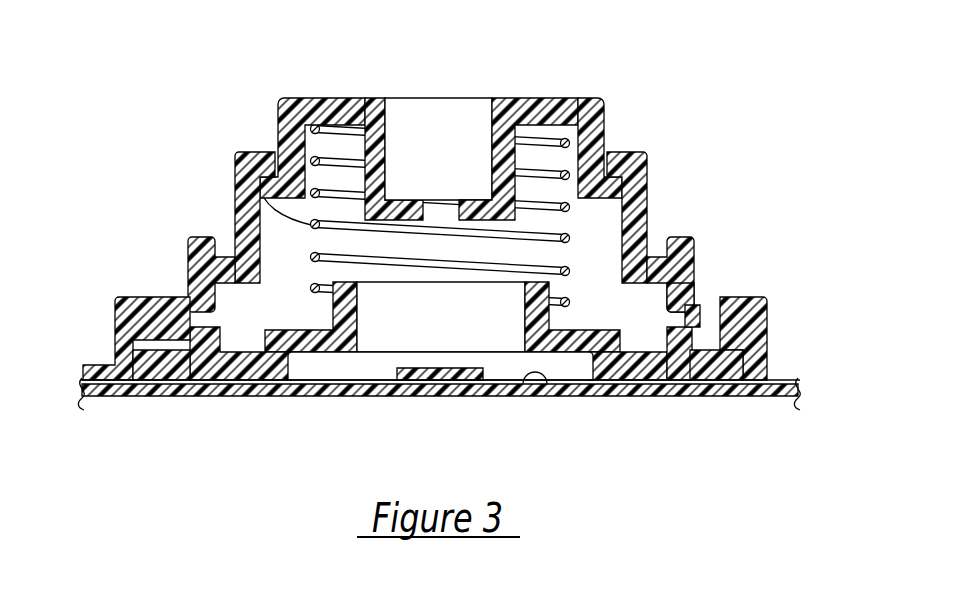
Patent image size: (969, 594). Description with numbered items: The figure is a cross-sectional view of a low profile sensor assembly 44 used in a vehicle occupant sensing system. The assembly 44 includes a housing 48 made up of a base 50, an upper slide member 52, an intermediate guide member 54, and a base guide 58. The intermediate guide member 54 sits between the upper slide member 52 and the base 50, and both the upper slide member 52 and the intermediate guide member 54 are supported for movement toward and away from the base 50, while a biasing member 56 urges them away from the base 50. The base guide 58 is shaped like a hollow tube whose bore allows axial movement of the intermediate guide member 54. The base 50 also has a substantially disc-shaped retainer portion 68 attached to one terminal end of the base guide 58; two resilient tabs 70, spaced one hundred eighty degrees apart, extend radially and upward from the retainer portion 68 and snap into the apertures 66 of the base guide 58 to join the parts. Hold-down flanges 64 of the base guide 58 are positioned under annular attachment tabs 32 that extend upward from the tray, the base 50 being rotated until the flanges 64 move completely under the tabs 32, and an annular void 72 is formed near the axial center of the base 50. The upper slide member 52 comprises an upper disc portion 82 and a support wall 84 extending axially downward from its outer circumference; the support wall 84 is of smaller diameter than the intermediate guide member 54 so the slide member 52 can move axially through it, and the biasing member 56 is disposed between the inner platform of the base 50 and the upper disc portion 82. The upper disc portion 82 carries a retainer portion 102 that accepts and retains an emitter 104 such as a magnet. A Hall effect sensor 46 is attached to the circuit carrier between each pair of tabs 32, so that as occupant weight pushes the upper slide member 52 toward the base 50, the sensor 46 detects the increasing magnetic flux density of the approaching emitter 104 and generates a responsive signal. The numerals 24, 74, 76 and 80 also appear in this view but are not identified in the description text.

The substrate 24 is at (537, 386).
The annular attachment tab 32 is at (749, 318).
The low profile sensor assembly 44 is at (694, 149).
The sensor 46 is at (434, 370).
The housing 48 is at (699, 237).
The base 50 is at (686, 293).
The upper slide member 52 is at (594, 129).
The intermediate guide member 54 is at (648, 174).
The biasing member 56 is at (259, 187).
The base guide 58 is at (190, 273).
The hold-down flange 64 is at (140, 365).
The aperture 66 is at (190, 330).
The retainer portion 68 is at (634, 372).
The resilient tab 70 is at (688, 334).
The annular void 72 is at (327, 368).
The piston flange 74 is at (279, 330).
The support 76 is at (235, 352).
The piston 80 is at (357, 302).
The upper disc portion 82 is at (536, 114).
The support wall 84 is at (292, 133).
The retainer portion 102 is at (370, 138).
The emitter 104 is at (438, 140).